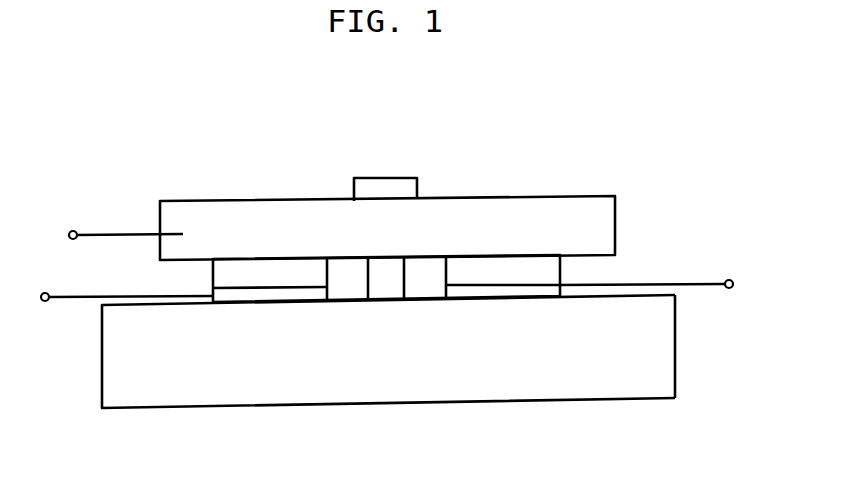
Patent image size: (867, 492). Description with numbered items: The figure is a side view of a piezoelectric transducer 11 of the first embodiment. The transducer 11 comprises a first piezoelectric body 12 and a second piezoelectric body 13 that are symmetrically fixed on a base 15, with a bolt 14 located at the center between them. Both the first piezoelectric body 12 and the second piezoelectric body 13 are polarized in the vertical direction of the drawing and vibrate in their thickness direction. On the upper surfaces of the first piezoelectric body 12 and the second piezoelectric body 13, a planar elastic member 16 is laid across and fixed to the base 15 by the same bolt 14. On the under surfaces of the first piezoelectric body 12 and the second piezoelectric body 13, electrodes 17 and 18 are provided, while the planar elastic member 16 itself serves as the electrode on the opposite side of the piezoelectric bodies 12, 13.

The transducer 11 is at (392, 412).
The first piezoelectric body 12 is at (240, 266).
The second piezoelectric body 13 is at (552, 271).
The bolt 14 is at (402, 187).
The base 15 is at (658, 338).
The planar elastic member 16 is at (603, 215).
The electrode 17 is at (235, 292).
The electrode 18 is at (529, 292).